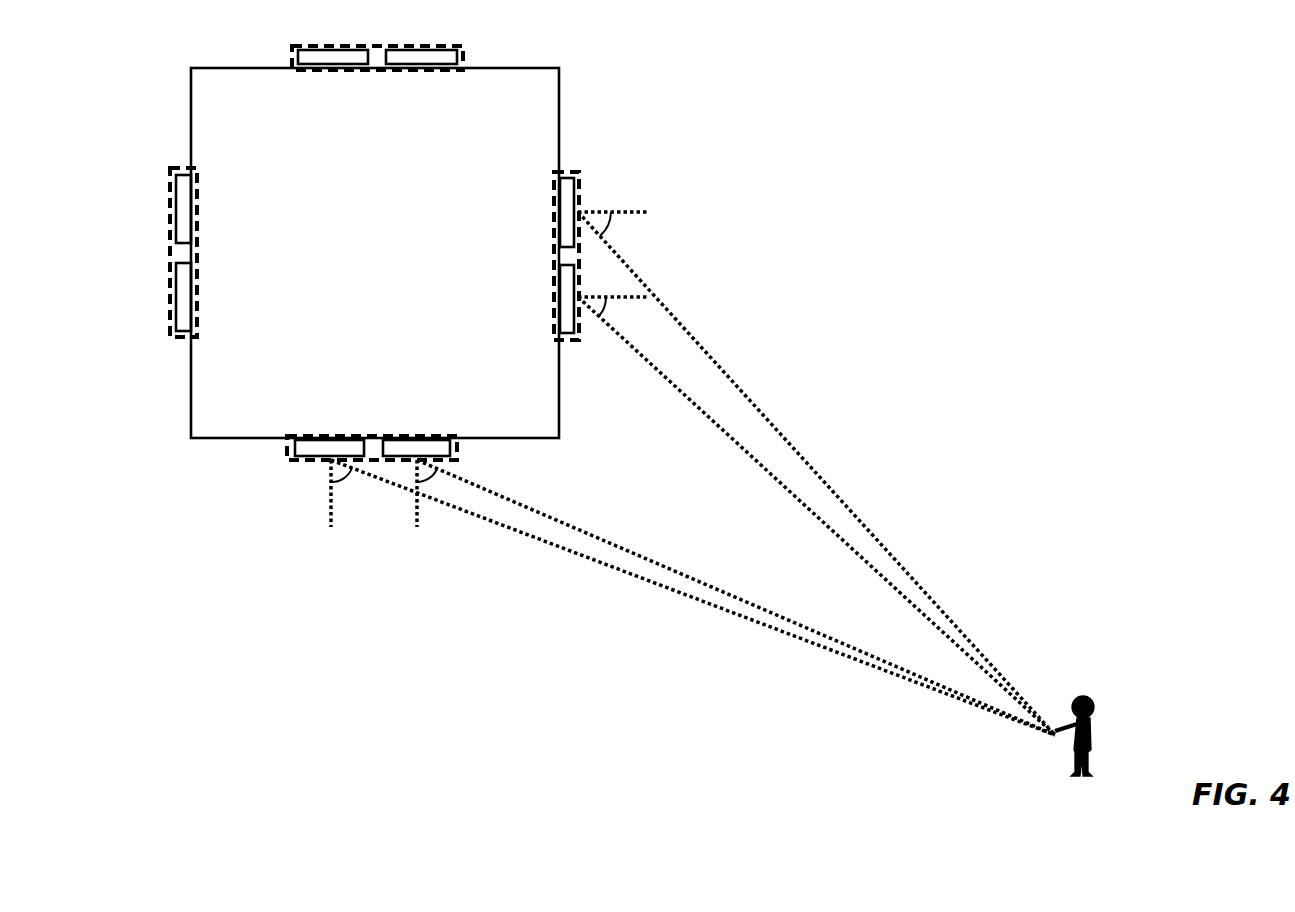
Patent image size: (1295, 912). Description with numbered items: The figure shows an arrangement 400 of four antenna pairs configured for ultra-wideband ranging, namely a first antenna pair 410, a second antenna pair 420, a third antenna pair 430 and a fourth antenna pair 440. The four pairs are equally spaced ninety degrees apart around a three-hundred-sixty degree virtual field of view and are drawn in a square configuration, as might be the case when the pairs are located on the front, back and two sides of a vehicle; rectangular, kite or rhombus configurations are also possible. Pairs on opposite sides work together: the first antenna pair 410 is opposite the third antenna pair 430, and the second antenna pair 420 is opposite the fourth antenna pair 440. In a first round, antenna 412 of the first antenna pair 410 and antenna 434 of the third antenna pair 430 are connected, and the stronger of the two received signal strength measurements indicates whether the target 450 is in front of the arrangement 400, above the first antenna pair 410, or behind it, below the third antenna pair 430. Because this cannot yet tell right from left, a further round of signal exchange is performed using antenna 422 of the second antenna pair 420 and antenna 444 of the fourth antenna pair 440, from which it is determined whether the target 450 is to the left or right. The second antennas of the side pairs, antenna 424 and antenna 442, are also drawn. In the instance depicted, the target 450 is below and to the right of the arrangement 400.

The arrangement 400 is at (695, 126).
The antenna pair AP1 410 is at (318, 71).
The antenna 412 is at (313, 48).
The antenna pair AP2 420 is at (197, 300).
The antenna 422 is at (172, 200).
The second antenna array of AP2 424 is at (173, 303).
The antenna pair AP3 430 is at (433, 437).
The antenna 434 is at (450, 459).
The antenna pair AP4 440 is at (562, 195).
The second antenna array of AP4 442 is at (580, 330).
The antenna 444 is at (580, 197).
The target 450 is at (1095, 702).